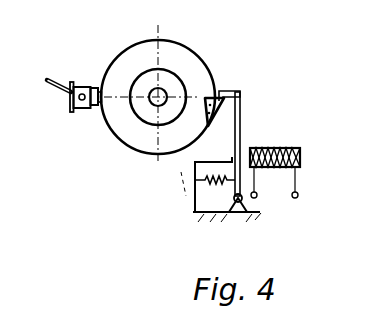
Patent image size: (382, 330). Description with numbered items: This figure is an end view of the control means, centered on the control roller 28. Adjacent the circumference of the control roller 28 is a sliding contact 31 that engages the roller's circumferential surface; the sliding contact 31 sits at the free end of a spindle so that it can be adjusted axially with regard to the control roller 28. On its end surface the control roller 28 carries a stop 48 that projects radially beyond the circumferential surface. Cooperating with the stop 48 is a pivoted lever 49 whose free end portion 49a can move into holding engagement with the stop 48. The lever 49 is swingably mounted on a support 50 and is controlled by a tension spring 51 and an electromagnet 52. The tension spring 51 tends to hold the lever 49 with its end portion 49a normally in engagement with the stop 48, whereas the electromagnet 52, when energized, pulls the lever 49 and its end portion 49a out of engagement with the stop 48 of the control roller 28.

The control roller 28 is at (112, 54).
The sliding contact 31 is at (100, 103).
The stop 48 is at (207, 122).
The pivoted lever 49 is at (240, 143).
The free end portion 49a is at (226, 89).
The support 50 is at (240, 214).
The tension spring 51 is at (217, 182).
The electromagnet 52 is at (295, 149).